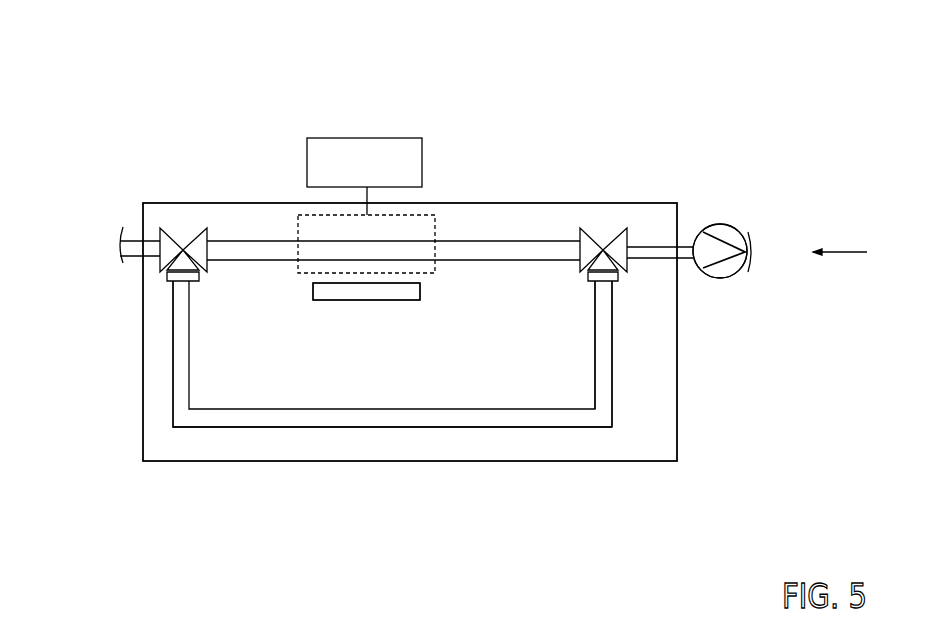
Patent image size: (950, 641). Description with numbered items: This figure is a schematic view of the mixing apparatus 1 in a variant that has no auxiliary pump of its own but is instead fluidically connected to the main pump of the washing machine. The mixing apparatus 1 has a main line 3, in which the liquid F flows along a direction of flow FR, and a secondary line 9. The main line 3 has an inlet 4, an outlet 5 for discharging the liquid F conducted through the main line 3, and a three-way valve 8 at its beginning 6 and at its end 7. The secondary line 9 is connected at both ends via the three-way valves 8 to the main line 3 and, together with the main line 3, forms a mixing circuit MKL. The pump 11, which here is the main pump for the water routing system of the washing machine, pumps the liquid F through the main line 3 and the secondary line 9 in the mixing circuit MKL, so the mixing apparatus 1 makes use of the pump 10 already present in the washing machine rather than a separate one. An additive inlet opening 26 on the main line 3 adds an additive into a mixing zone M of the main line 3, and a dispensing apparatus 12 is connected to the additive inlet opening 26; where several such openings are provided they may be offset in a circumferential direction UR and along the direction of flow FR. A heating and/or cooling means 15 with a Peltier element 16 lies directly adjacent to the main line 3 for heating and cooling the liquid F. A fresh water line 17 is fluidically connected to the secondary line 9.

The mixing apparatus 1 is at (100, 95).
The main line 3 is at (513, 250).
The inlet 4 is at (685, 273).
The outlet 5 is at (118, 245).
The beginning 6 is at (569, 276).
The end 7 is at (213, 272).
The three-way valve 8 is at (160, 278).
The secondary line 9 is at (185, 397).
The pump 10 is at (717, 224).
The pump 11 is at (720, 251).
The dispensing apparatus 12 is at (363, 152).
The heating and/or cooling means 15 is at (372, 293).
The Peltier element 16 is at (366, 291).
The fresh water line 17 is at (767, 250).
The additive inlet opening 26 is at (373, 235).
The mixing zone M is at (297, 236).
The liquid F is at (545, 245).
The direction of flow FR is at (843, 252).
The circumferential direction UR is at (878, 262).
The mixing circuit MKL is at (645, 380).